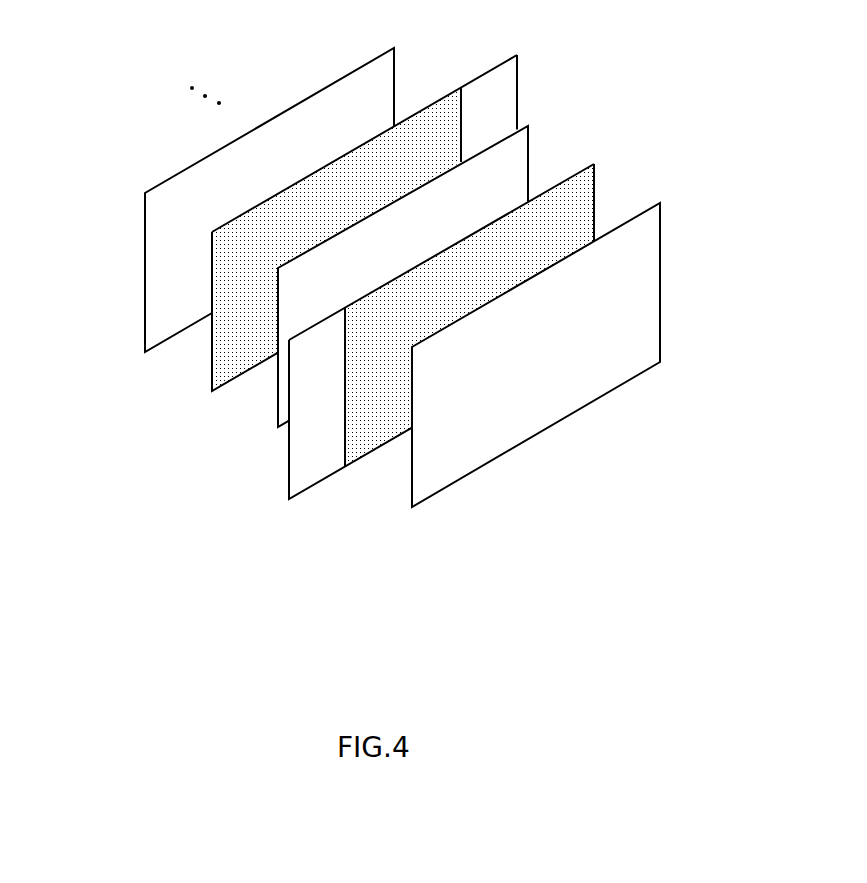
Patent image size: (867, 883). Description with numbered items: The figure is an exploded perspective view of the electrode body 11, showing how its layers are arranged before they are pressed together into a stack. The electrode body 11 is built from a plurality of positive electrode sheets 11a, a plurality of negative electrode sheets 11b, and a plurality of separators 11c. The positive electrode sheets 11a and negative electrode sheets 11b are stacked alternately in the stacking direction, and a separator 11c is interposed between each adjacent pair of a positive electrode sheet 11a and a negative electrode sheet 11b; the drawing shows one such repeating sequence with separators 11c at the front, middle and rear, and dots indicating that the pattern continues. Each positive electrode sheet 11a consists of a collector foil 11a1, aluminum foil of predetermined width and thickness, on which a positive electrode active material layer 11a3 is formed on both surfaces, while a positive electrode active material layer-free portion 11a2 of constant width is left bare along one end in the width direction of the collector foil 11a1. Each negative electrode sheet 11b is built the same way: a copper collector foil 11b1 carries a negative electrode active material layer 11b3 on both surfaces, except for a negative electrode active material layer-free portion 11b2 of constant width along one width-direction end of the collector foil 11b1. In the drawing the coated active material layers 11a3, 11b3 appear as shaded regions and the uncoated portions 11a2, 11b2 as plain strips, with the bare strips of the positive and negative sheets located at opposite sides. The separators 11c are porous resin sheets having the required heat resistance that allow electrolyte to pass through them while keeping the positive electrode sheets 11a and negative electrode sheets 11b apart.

The electrode body 11 is at (375, 290).
The positive electrode sheet 11a is at (392, 370).
The collector foil 11a1 is at (310, 327).
The positive electrode active material layer-free portion 11a2 is at (308, 452).
The positive electrode active material layer 11a3 is at (363, 445).
The negative electrode sheet 11b is at (360, 205).
The collector foil 11b1 is at (483, 73).
The negative electrode active material layer-free portion 11b2 is at (497, 92).
The negative electrode active material layer 11b3 is at (457, 137).
The separator 11c is at (145, 323).